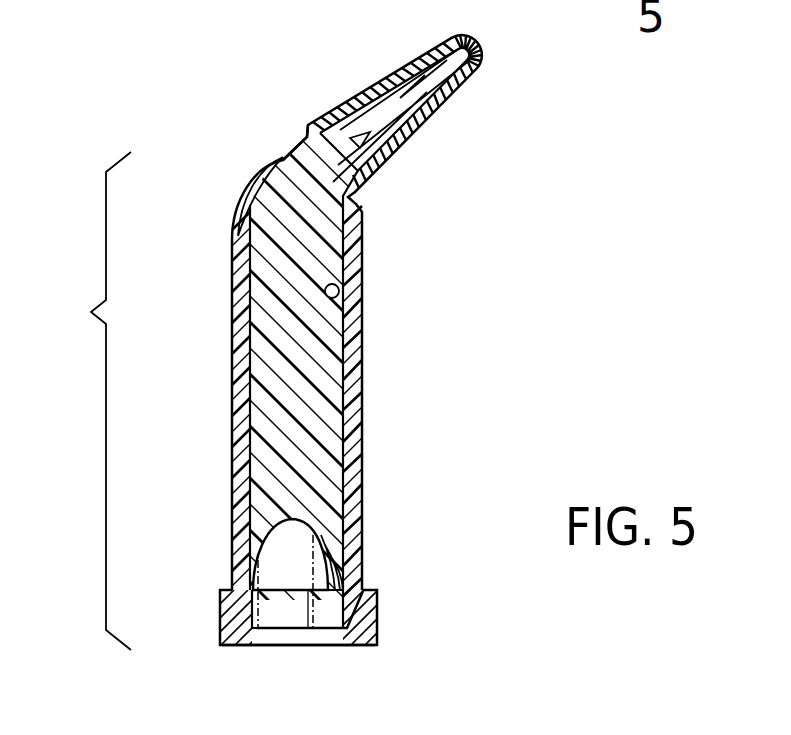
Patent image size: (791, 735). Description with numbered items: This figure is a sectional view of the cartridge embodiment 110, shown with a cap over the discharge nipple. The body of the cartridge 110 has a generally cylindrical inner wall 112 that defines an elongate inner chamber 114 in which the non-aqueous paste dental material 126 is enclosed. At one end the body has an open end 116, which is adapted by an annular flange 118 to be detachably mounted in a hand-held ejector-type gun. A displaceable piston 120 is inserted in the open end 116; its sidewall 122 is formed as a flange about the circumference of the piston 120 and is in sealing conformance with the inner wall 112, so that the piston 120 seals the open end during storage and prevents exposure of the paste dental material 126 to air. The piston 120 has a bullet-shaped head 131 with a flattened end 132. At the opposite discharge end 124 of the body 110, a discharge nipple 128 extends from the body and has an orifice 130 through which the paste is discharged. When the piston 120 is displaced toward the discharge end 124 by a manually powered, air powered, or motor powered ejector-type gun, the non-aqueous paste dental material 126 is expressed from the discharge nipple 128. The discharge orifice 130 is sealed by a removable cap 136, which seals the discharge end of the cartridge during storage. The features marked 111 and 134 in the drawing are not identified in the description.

The cartridge embodiment 110 is at (495, 207).
The outer wall of body 111 is at (363, 333).
The inner wall 112 is at (339, 290).
The inner chamber 114 is at (76, 401).
The open end 116 is at (270, 647).
The annular flange 118 is at (378, 612).
The displaceable piston 120 is at (360, 553).
The sidewall 122 is at (248, 603).
The discharge end 124 is at (287, 158).
The non-aqueous paste dental material 126 is at (262, 392).
The discharge nipple 128 is at (382, 78).
The orifice 130 is at (403, 113).
The bullet-shaped head 131 is at (283, 555).
The flattened end 132 is at (293, 513).
The shoulder membrane 134 is at (245, 198).
The removable cap 136 is at (480, 72).